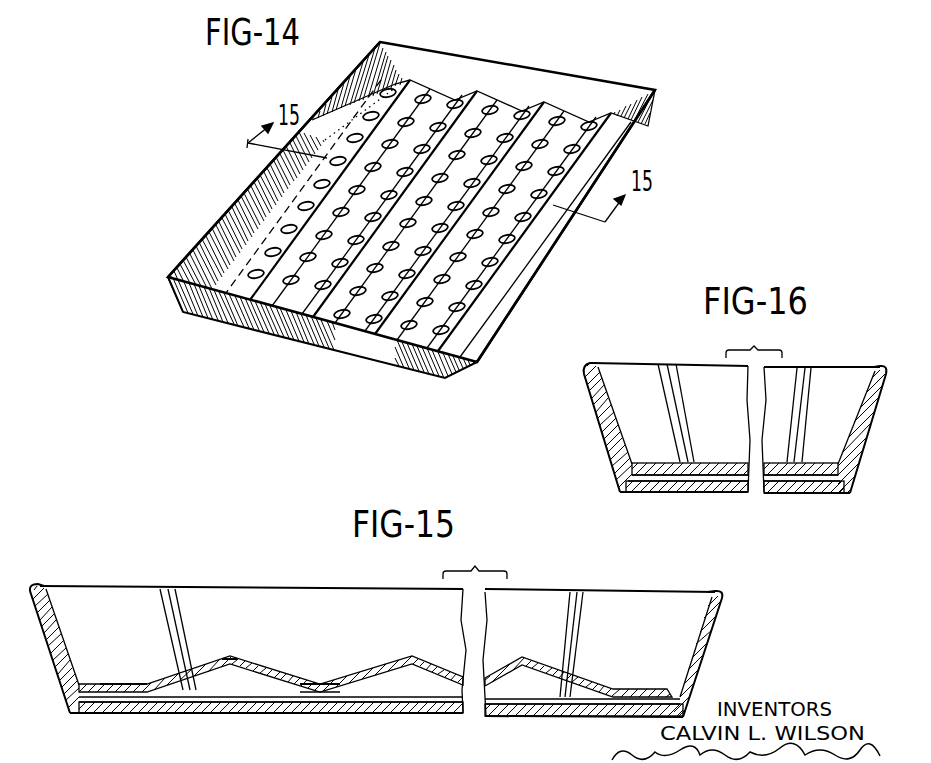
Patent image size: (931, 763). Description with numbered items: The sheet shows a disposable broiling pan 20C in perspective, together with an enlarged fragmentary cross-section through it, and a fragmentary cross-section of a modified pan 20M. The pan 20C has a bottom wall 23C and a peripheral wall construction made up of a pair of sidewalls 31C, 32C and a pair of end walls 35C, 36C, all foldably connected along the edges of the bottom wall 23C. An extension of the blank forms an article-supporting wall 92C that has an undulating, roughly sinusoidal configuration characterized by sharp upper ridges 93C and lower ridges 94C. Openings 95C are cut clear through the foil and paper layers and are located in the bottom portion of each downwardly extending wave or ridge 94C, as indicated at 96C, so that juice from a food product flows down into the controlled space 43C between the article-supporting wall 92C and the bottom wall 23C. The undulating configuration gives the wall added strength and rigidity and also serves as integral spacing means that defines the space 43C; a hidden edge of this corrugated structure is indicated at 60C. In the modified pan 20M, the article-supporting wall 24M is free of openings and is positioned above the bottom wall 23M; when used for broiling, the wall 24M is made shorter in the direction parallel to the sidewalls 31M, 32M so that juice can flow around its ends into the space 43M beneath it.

In FIG. 14, the pan 20C is at (160, 177).
In FIG. 15, the pan 20C is at (137, 533).
In FIG. 14, the sidewall 31C is at (243, 205).
In FIG. 15, the sidewall 31C is at (52, 603).
In FIG. 14, the sidewall 32C is at (545, 247).
In FIG. 15, the sidewall 32C is at (712, 640).
In FIG. 14, the end wall 35C is at (295, 323).
In FIG. 14, the end wall 36C is at (523, 75).
In FIG. 15, the end wall 36C is at (185, 605).
In FIG. 14, the hidden rib edge 60C is at (293, 187).
In FIG. 14, the article-supporting wall 92C is at (498, 265).
In FIG. 15, the article-supporting wall 92C is at (253, 667).
In FIG. 14, the upper ridge 93C is at (362, 316).
In FIG. 15, the upper ridge 93C is at (230, 658).
In FIG. 14, the lower ridge 94C is at (338, 315).
In FIG. 15, the lower ridge 94C is at (320, 690).
In FIG. 14, the openings 95C is at (463, 277).
In FIG. 15, the openings 95C is at (148, 683).
In FIG. 15, the bottom portion of downwardly extending ridge 96C is at (328, 669).
In FIG. 15, the controlled space 43C is at (223, 683).
In FIG. 15, the bottom wall 23C is at (407, 717).
In FIG. 16, the pan 20M is at (660, 340).
In FIG. 16, the sidewall 31M is at (592, 404).
In FIG. 16, the sidewall 32M is at (868, 450).
In FIG. 16, the article-supporting wall 24M is at (725, 462).
In FIG. 16, the space 43M is at (693, 481).
In FIG. 16, the bottom wall 23M is at (767, 493).